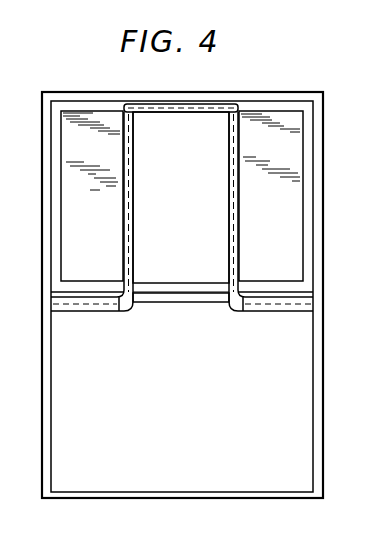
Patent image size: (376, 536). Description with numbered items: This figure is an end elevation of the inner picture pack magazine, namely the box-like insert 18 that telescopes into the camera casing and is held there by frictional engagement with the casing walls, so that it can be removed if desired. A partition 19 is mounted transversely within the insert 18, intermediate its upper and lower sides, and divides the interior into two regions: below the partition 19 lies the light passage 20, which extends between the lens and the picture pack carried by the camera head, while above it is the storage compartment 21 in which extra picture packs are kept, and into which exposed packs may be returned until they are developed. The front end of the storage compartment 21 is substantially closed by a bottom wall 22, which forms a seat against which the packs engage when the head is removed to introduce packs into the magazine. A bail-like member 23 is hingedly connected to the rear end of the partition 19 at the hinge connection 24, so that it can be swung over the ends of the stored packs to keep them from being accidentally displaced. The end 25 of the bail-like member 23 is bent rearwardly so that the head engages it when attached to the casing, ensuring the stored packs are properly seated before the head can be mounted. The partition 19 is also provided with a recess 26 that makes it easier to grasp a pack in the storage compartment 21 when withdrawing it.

The insert 18 is at (323, 372).
The partition 19 is at (146, 305).
The light passage 20 is at (210, 388).
The storage compartment 21 is at (197, 156).
The bottom wall 22 is at (105, 211).
The bail-like member 23 is at (134, 211).
The hinge connection 24 is at (80, 315).
The end of bail-like member 25 is at (190, 104).
The recess 26 is at (194, 305).